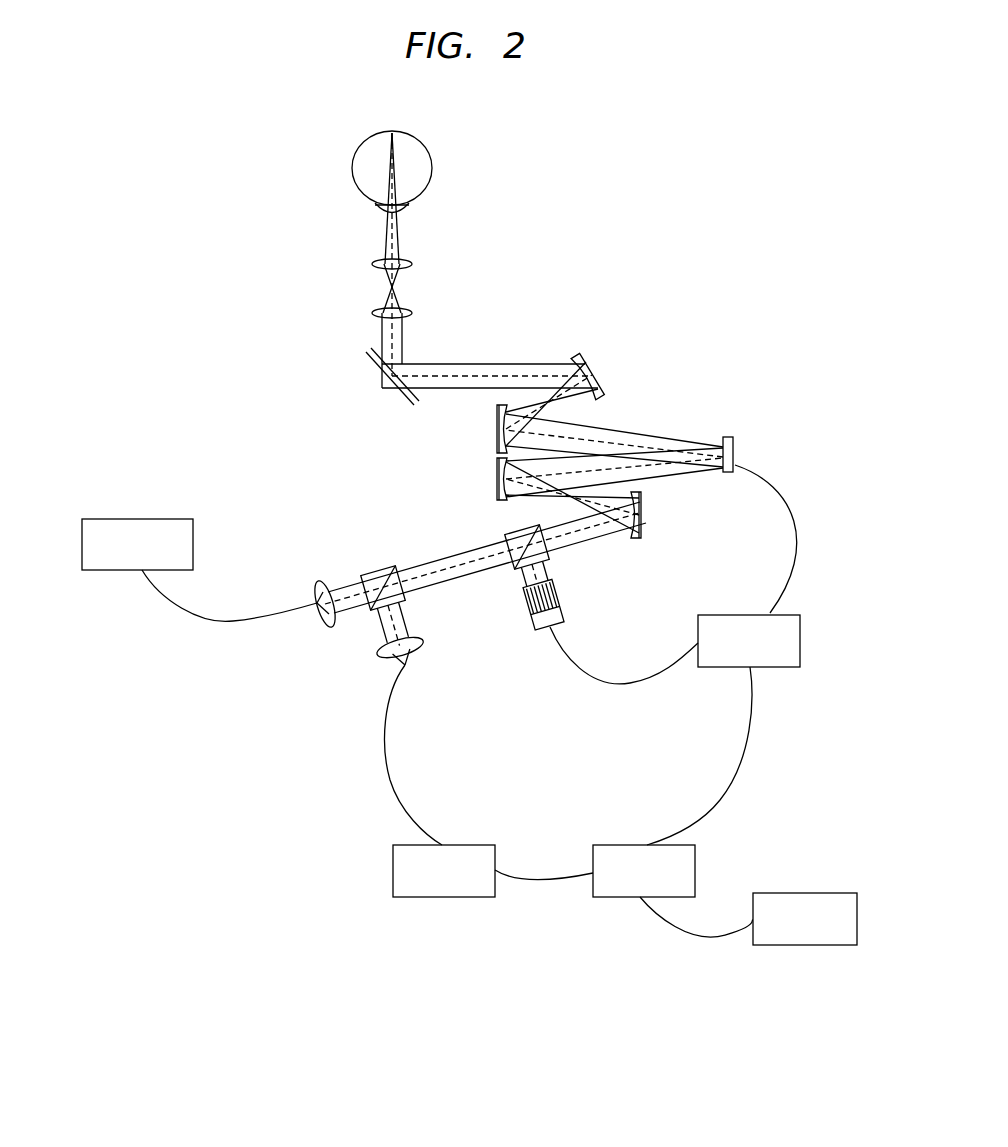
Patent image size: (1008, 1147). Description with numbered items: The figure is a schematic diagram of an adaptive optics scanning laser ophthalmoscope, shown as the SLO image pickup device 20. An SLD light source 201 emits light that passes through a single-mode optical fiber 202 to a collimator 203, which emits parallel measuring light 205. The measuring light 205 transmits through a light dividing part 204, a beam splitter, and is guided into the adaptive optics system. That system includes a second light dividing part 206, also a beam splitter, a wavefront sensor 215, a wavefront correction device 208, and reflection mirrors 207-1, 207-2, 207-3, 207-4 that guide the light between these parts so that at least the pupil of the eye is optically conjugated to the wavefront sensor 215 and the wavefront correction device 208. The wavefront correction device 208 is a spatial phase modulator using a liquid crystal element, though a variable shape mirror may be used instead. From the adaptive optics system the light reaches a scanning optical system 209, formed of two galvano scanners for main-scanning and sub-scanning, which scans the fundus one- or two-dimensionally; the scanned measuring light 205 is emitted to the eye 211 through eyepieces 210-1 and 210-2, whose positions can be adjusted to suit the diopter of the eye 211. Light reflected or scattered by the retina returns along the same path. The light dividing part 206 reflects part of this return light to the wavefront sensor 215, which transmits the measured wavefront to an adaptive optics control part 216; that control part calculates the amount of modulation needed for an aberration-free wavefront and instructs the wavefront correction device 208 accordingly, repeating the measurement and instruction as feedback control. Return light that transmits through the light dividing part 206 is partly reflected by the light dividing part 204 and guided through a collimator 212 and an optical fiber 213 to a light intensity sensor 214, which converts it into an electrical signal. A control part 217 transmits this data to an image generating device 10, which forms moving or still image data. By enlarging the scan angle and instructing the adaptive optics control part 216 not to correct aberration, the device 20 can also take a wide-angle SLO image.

The SLO image pickup device 20 is at (532, 150).
The image generating device 10 is at (807, 940).
The light source 201 is at (135, 530).
The single-mode optical fiber 202 is at (222, 622).
The collimator 203 is at (334, 626).
The light dividing part 204 is at (378, 569).
The measuring light 205 is at (425, 562).
The light dividing part 206 is at (513, 532).
The reflection mirror 207-1 is at (647, 515).
The reflection mirror 207-2 is at (496, 478).
The reflection mirror 207-3 is at (496, 432).
The reflection mirror 207-4 is at (604, 372).
The wavefront correction device 208 is at (735, 450).
The scanning optical system 209 is at (380, 384).
The eyepiece 210-1 is at (412, 313).
The eyepiece 210-2 is at (412, 264).
The eye 211 is at (433, 168).
The collimator 212 is at (426, 638).
The optical fiber 213 is at (388, 736).
The light intensity sensor 214 is at (444, 888).
The wavefront sensor 215 is at (560, 597).
The adaptive optics control part 216 is at (733, 621).
The control part 217 is at (633, 890).